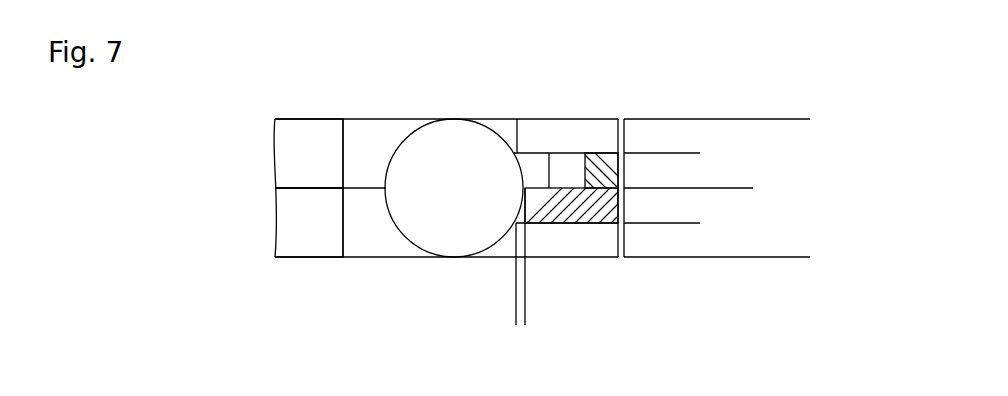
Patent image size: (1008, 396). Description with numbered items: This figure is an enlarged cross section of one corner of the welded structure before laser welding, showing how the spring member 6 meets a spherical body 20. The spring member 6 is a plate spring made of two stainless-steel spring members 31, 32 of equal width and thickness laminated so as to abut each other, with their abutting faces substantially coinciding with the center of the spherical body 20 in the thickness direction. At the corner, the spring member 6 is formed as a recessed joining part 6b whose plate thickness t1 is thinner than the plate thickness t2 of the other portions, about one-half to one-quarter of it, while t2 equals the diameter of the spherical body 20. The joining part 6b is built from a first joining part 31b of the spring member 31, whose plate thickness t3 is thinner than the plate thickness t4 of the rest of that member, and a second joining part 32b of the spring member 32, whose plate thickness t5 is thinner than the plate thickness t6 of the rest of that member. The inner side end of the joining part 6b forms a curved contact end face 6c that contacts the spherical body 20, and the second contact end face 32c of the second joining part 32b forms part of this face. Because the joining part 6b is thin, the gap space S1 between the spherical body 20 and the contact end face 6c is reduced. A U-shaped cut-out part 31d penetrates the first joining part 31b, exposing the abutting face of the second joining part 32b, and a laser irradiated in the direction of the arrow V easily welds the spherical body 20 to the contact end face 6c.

The spring member 6 is at (309, 127).
The spring member 31 is at (308, 118).
The spring member 32 is at (308, 258).
The spherical body 20 is at (455, 118).
The cut-out part 31d is at (530, 158).
The joining part 6b is at (624, 139).
The first joining part 31b is at (607, 152).
The contact end face 6c is at (543, 210).
The second contact end face 32c is at (524, 220).
The second joining part 32b is at (593, 223).
The arrow V is at (632, 67).
The plate thickness t1 is at (697, 223).
The plate thickness t2 is at (804, 119).
The plate thickness t3 is at (646, 153).
The plate thickness t4 is at (748, 119).
The plate thickness t5 is at (646, 188).
The plate thickness t6 is at (748, 188).
The gap space S1 is at (538, 314).